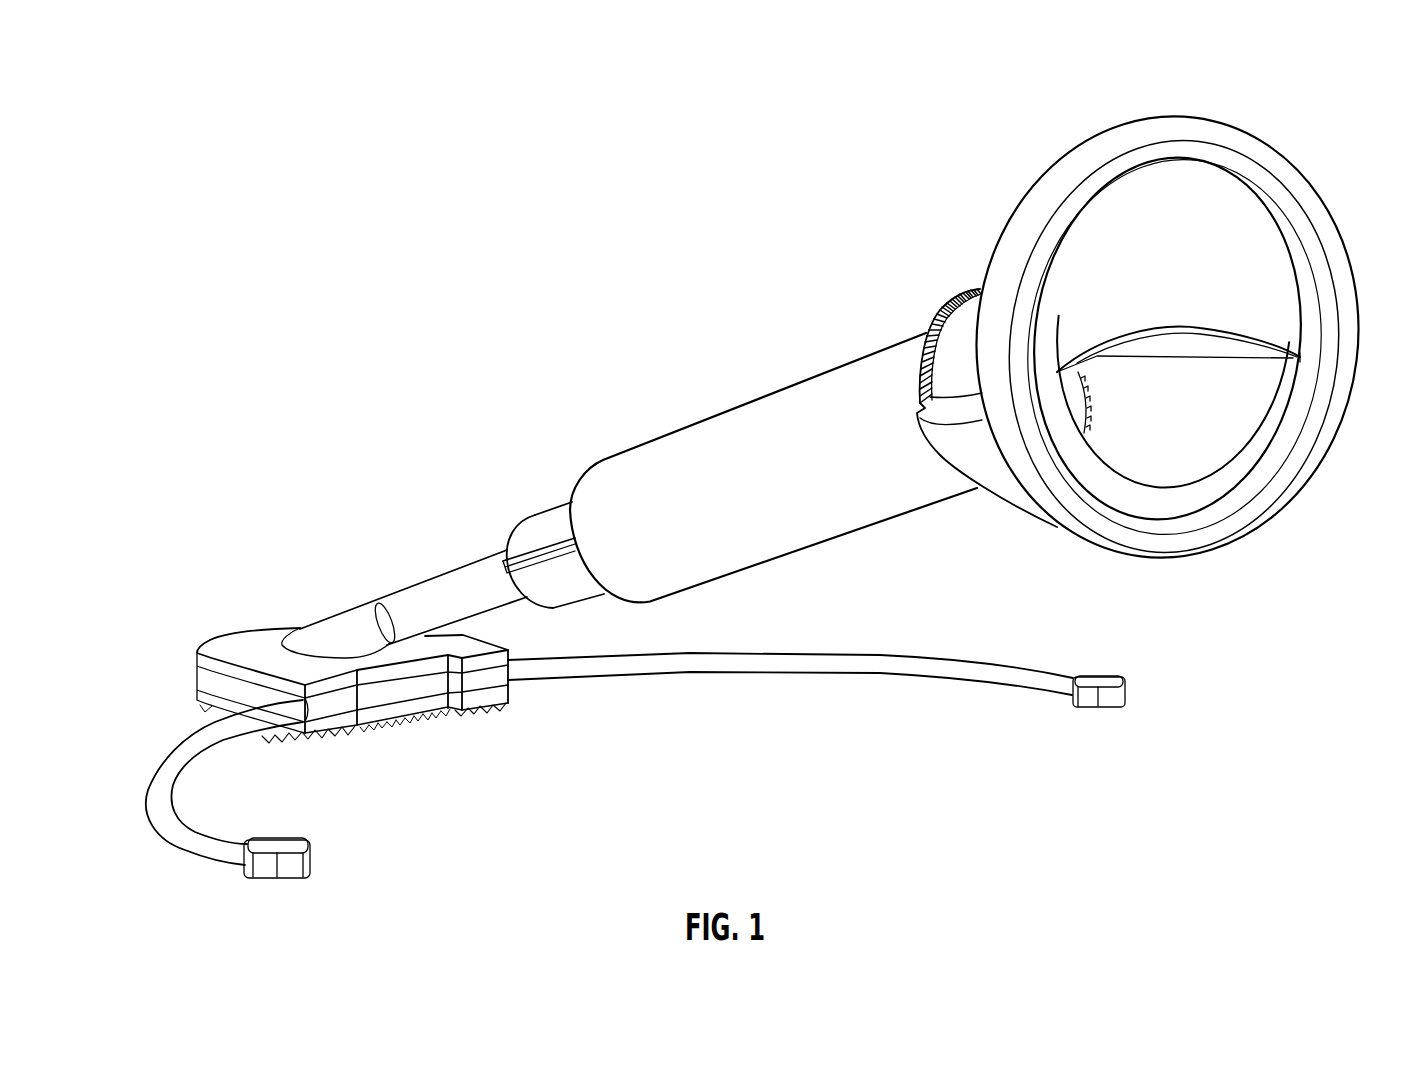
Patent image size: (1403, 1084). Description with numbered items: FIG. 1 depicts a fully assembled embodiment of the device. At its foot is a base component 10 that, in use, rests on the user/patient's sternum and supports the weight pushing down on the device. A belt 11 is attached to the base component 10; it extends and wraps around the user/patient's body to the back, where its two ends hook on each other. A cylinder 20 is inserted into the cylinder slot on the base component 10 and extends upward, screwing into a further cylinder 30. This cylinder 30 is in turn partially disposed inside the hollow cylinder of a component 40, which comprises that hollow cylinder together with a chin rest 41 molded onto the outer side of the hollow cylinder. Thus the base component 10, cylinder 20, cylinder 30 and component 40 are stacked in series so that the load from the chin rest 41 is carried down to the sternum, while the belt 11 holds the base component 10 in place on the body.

The base component 10 is at (230, 645).
The belt 11 is at (180, 746).
The cylinder 20 is at (435, 588).
The cylinder 30 is at (548, 518).
The component 40 is at (780, 402).
The chin rest 41 is at (1120, 125).